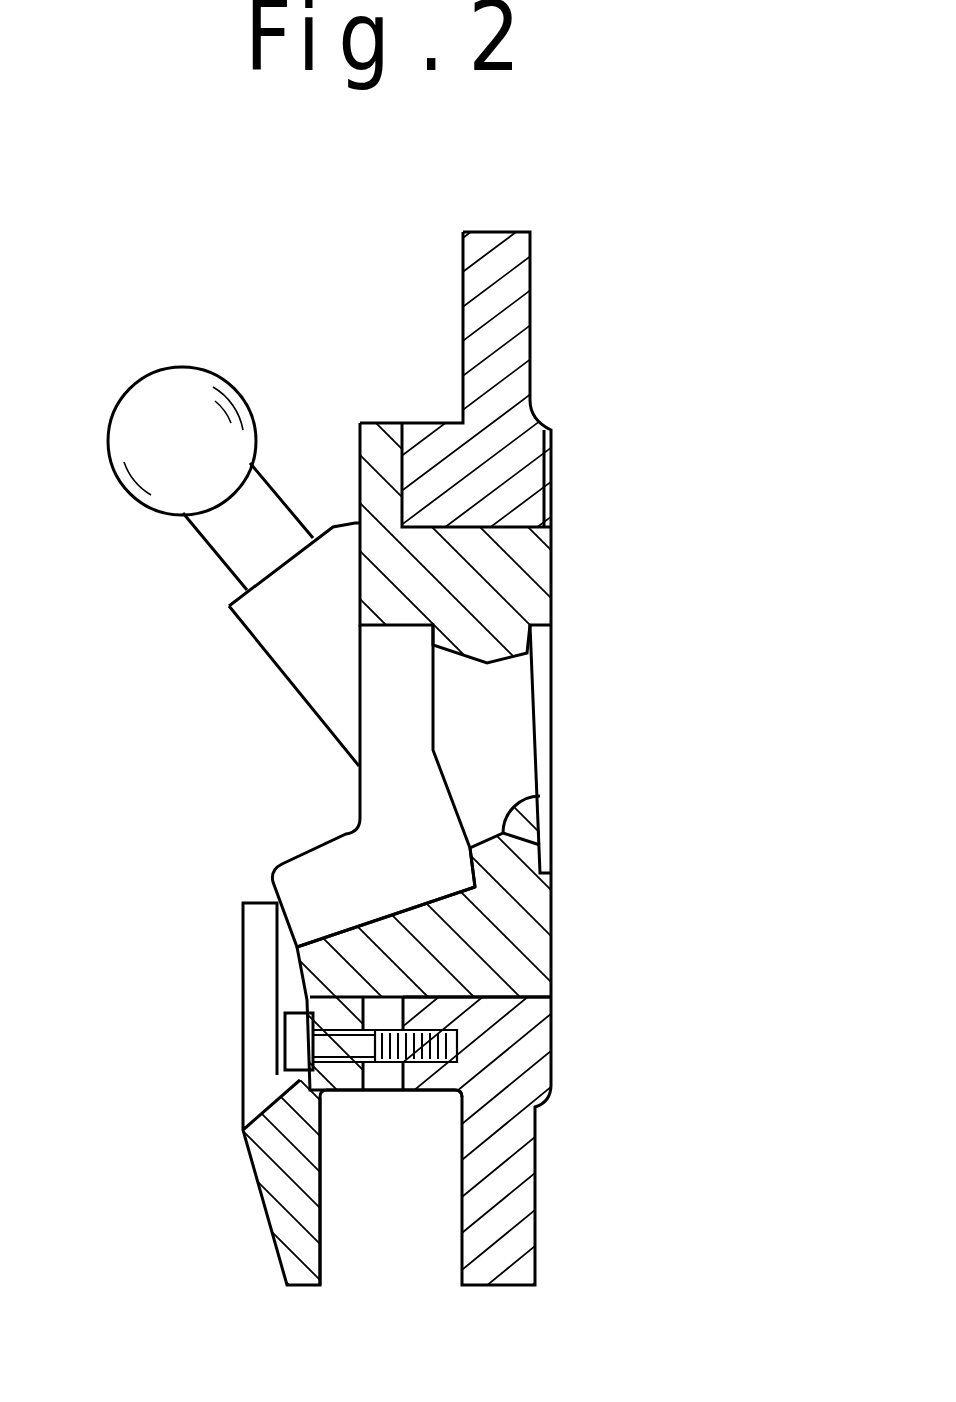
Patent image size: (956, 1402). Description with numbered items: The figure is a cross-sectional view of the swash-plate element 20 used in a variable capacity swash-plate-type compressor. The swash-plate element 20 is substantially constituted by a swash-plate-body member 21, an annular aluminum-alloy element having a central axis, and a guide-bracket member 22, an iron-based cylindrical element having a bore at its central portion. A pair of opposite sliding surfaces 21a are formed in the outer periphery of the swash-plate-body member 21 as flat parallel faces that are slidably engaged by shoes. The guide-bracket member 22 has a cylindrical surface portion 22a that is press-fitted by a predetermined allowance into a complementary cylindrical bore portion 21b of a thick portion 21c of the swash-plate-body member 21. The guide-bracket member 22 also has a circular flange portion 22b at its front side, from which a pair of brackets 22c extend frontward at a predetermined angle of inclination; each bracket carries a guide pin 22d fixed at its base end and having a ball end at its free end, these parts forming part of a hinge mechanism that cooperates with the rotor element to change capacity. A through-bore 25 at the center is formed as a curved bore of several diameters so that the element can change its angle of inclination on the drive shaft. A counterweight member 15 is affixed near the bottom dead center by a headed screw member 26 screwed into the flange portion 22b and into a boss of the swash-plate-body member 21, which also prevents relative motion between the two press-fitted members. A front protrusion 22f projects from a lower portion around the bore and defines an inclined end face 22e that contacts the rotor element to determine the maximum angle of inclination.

The counterweight member 15 is at (283, 1183).
The swash-plate element 20 is at (590, 450).
The swash-plate-body member 21 is at (510, 340).
The sliding surfaces 21a is at (463, 281).
The cylindrical bore portion 21b is at (470, 530).
The thick portion 21c is at (520, 500).
The guide-bracket member 22 is at (515, 930).
The cylindrical surface portion 22a is at (505, 1000).
The circular flange portion 22b is at (393, 1075).
The brackets 22c is at (287, 625).
The guide pin 22d is at (222, 530).
The inclined end face 22e is at (297, 967).
The front protrusion 22f is at (343, 940).
The through-bore 25 is at (541, 789).
The headed screw member 26 is at (285, 1035).